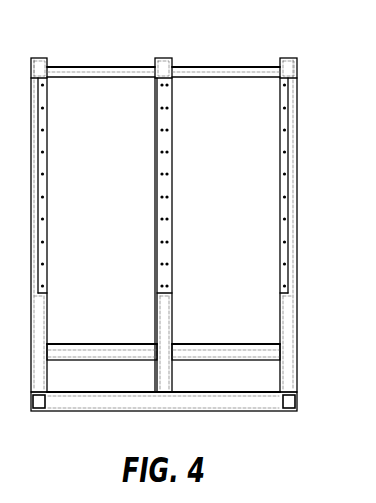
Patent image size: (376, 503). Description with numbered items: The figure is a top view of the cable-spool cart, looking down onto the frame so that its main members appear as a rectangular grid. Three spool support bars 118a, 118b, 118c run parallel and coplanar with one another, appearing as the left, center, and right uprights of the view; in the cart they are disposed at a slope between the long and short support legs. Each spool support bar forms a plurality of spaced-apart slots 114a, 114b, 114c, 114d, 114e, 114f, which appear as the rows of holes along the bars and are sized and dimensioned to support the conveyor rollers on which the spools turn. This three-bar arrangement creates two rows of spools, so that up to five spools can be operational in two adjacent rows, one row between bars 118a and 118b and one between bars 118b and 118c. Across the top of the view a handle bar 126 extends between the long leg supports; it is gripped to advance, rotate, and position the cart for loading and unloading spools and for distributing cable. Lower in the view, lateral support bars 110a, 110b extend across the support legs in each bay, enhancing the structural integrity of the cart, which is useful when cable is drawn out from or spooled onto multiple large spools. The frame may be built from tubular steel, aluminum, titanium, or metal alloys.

The spool support bar 118a is at (38, 58).
The spool support bar 118b is at (165, 58).
The spool support bar 118c is at (286, 58).
The handle bar 126 is at (248, 67).
The slot 114a is at (56, 129).
The slot 114b is at (148, 130).
The slot 114c is at (272, 130).
The slot 114d is at (56, 220).
The slot 114e is at (181, 220).
The slot 114f is at (272, 220).
The lateral support bar 110a is at (128, 347).
The lateral support bar 110b is at (196, 347).